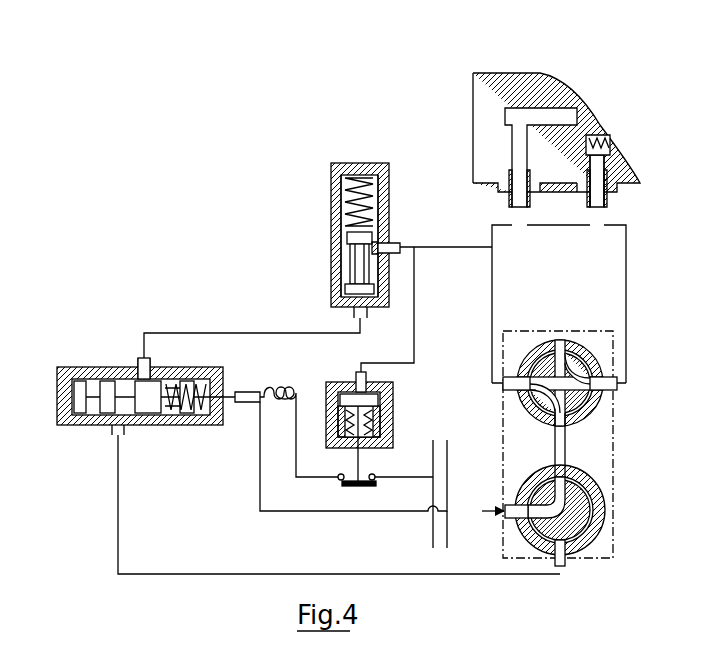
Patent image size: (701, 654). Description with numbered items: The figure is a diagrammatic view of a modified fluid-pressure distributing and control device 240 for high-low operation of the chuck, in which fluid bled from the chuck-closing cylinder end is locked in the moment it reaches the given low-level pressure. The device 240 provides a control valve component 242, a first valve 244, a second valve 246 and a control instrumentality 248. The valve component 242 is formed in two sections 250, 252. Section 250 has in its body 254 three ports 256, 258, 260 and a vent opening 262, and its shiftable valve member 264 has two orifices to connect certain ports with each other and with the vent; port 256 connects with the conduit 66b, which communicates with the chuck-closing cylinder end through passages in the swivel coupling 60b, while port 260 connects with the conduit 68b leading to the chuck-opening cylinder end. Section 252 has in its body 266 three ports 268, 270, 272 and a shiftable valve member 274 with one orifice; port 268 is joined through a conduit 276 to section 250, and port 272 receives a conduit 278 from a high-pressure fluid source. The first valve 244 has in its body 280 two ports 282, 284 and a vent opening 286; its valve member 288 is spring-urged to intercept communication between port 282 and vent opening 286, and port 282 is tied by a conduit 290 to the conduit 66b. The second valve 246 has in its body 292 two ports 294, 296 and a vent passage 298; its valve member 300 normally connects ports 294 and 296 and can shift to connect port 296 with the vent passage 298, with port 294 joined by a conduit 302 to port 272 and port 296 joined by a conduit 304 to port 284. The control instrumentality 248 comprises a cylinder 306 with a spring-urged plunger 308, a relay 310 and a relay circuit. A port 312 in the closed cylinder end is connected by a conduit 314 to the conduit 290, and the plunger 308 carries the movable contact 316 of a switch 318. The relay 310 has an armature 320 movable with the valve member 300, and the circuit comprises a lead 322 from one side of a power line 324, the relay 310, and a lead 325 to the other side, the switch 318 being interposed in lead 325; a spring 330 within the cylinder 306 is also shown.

The swivel coupling 60b is at (503, 72).
The conduit 66b is at (492, 293).
The conduit 68b is at (598, 207).
The fluid-pressure distributing and control device 240 is at (228, 258).
The control valve component 242 is at (618, 420).
The first valve 244 is at (358, 238).
The second valve 246 is at (302, 448).
The control instrumentality 248 is at (305, 372).
The valve section 250 is at (567, 376).
The valve section 252 is at (558, 526).
The body 254 is at (588, 360).
The port 256 is at (520, 392).
The port 258 is at (570, 424).
The port 260 is at (610, 378).
The vent opening 262 is at (560, 352).
The shiftable valve member 264 is at (545, 400).
The body 266 is at (600, 495).
The port 268 is at (560, 478).
The port 270 is at (530, 520).
The port 272 is at (566, 565).
The shiftable valve member 274 is at (580, 510).
The conduit 276 is at (556, 447).
The conduit 278 is at (505, 504).
The body 280 is at (331, 175).
The port 282 is at (392, 243).
The port 284 is at (354, 310).
The vent opening 286 is at (341, 222).
The valve member 288 is at (355, 252).
The conduit 290 is at (470, 247).
The body 292 is at (72, 425).
The port 294 is at (130, 425).
The port 296 is at (160, 381).
The vent passage 298 is at (183, 425).
The valve member 300 is at (132, 382).
The conduit 302 is at (118, 470).
The conduit 304 is at (241, 333).
The cylinder 306 is at (366, 430).
The plunger 308 is at (380, 407).
The relay 310 is at (276, 383).
The port 312 is at (352, 382).
The conduit 314 is at (414, 350).
The movable contact 316 is at (356, 486).
The switch 318 is at (375, 473).
The armature 320 is at (252, 402).
The lead 322 is at (310, 511).
The power line 324 is at (428, 548).
The lead 325 is at (297, 474).
The spring 330 is at (374, 432).